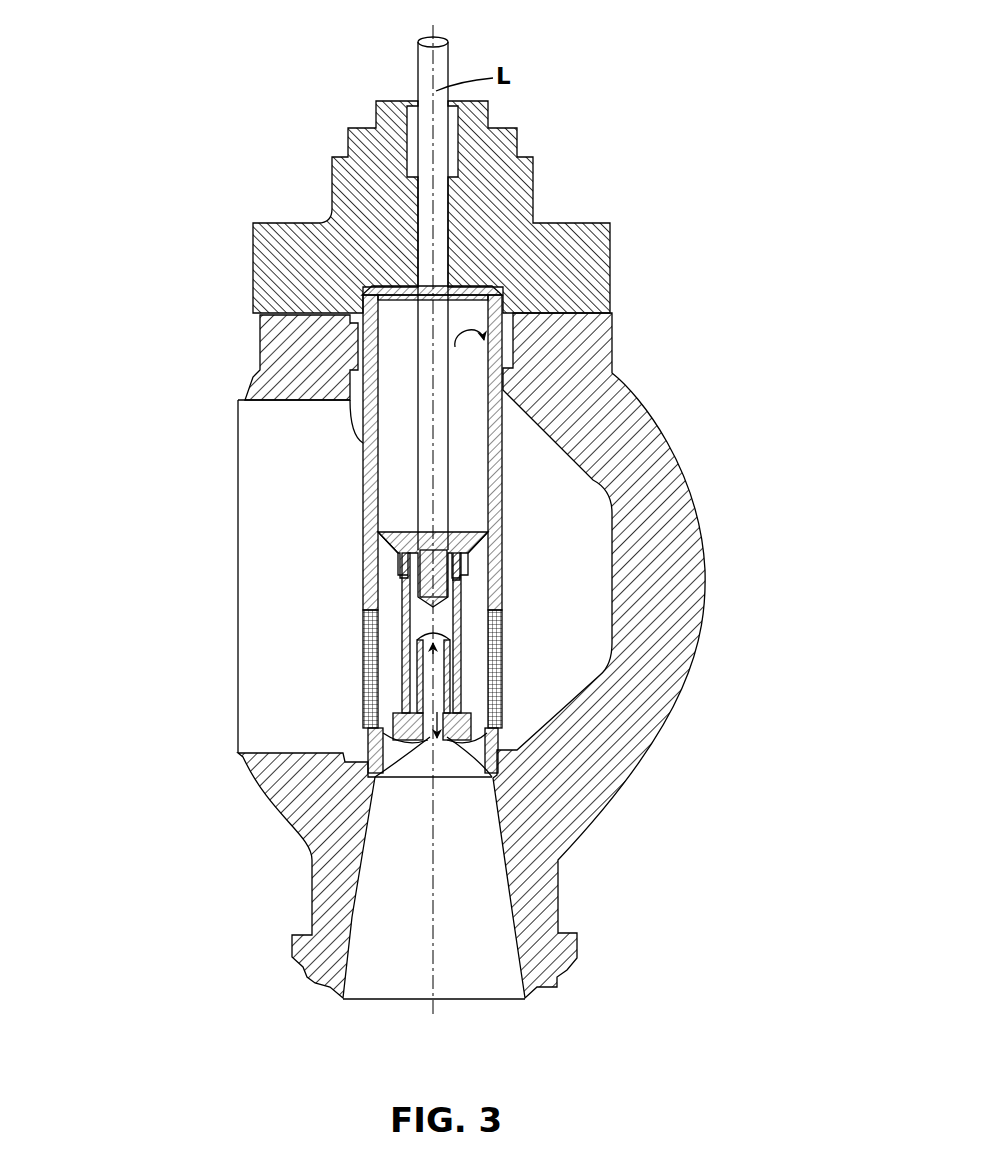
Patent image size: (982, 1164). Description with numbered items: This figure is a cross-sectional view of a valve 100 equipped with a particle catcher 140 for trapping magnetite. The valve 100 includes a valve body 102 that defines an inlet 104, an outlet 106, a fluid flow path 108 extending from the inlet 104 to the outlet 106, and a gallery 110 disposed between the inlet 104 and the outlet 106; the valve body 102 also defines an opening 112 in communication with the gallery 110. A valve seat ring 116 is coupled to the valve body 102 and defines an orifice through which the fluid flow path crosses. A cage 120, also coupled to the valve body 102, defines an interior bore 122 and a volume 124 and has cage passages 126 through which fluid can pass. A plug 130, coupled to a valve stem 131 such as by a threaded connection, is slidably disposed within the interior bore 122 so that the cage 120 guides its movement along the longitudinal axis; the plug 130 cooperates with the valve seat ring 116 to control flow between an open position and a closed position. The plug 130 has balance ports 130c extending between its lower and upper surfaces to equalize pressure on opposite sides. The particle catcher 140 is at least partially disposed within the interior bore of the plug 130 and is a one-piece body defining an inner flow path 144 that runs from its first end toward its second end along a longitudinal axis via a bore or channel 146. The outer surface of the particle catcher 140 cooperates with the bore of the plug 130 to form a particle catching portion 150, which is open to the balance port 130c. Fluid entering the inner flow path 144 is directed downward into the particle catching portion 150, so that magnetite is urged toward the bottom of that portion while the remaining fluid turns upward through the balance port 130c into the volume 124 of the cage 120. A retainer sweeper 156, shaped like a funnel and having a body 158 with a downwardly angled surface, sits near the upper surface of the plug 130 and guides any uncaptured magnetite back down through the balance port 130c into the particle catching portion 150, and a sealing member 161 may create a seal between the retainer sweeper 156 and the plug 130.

The valve 100 is at (165, 461).
The valve body 102 is at (622, 427).
The inlet 104 is at (497, 1020).
The outlet 106 is at (230, 651).
The fluid flow path 108 is at (318, 711).
The gallery 110 is at (578, 551).
The opening 112 is at (352, 310).
The valve seat ring 116 is at (469, 786).
The cage 120 is at (557, 511).
The interior bore 122 is at (507, 313).
The volume 124 is at (485, 456).
The cage passages 126 is at (500, 663).
The plug 130 is at (525, 712).
The balance ports 130c is at (408, 607).
The valve stem 131 is at (437, 50).
The particle catcher 140 is at (500, 748).
The inner flow path 144 is at (443, 743).
The bore or channel 146 is at (378, 770).
The particle catching portion 150 is at (405, 672).
The retainer sweeper 156 is at (492, 542).
The body 158 is at (500, 567).
The sealing member 161 is at (500, 592).